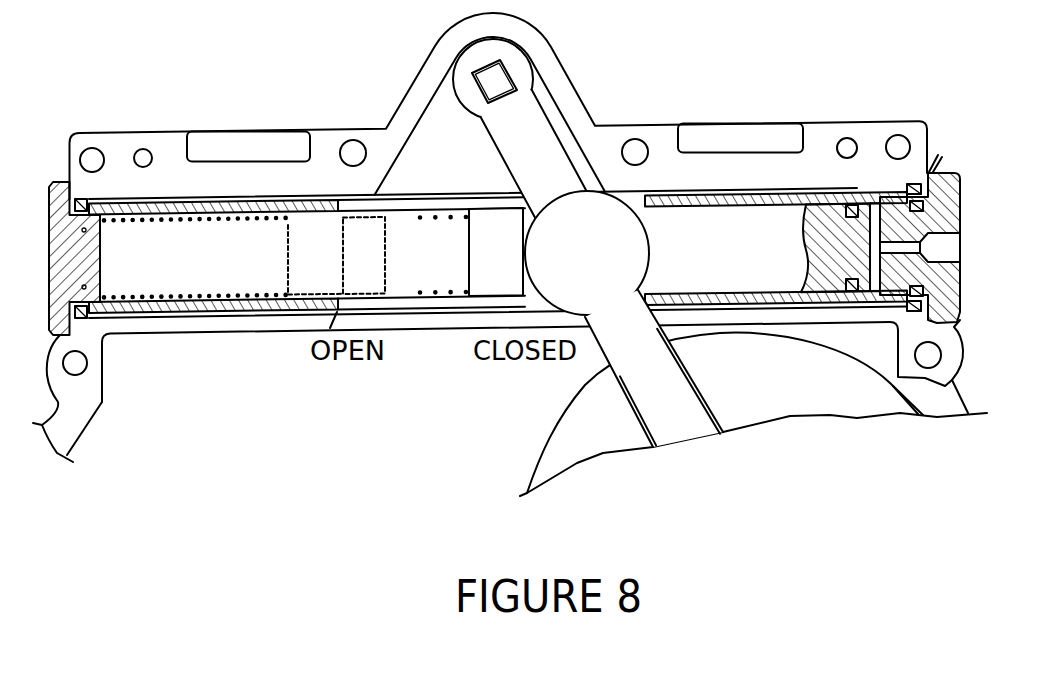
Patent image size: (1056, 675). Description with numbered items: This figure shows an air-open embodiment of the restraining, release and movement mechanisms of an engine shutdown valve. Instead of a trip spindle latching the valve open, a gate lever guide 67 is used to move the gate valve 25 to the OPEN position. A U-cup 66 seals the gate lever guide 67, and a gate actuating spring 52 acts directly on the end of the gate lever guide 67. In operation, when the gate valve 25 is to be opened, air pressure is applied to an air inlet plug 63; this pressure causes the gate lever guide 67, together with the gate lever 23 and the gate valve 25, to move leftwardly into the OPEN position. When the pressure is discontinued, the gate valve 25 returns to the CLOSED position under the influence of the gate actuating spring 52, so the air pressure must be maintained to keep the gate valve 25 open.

The gate actuating spring 52 is at (232, 307).
The gate lever 23 is at (603, 354).
The gate lever guide 67 is at (753, 293).
The U-cup 66 is at (853, 206).
The air inlet plug 63 is at (963, 276).
The gate valve 25 is at (953, 387).